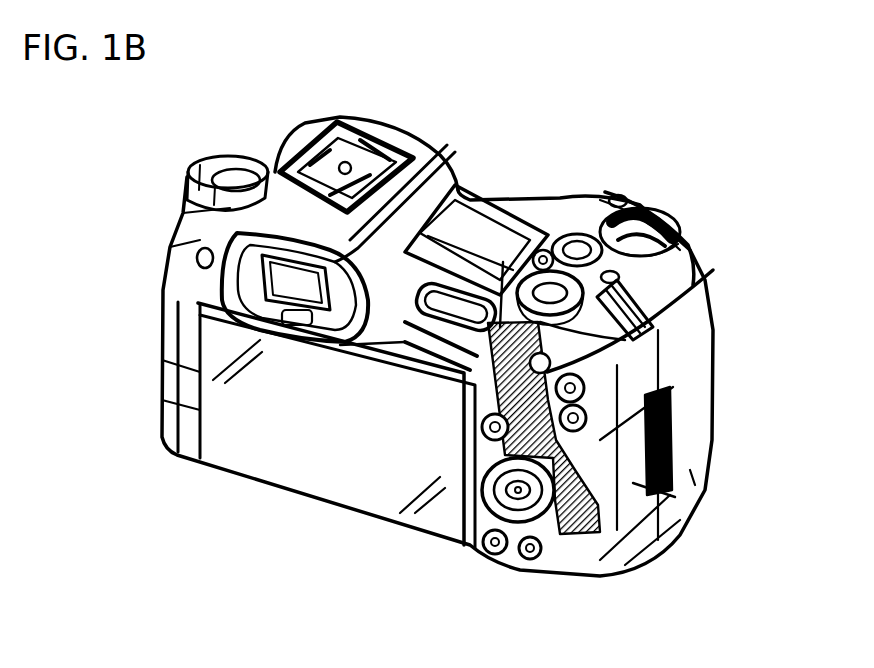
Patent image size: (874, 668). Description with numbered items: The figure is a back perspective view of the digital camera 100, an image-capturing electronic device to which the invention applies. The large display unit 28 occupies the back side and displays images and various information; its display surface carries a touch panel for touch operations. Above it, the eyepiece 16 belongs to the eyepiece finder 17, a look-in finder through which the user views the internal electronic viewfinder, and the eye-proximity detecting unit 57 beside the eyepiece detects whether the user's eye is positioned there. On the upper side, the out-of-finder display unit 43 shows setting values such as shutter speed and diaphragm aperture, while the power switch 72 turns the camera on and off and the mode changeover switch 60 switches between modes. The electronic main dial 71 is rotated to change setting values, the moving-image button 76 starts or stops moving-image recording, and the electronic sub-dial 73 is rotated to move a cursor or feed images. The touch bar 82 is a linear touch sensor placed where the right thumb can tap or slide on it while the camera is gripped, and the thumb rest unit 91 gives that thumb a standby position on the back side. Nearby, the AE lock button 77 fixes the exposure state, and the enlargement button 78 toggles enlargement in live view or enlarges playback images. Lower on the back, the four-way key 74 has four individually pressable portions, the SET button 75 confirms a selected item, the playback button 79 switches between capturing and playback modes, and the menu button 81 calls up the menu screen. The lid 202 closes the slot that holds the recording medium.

The digital camera 100 is at (656, 153).
The power switch 72 is at (243, 181).
The eyepiece 16 is at (286, 262).
The eyepiece finder 17 is at (443, 153).
The out-of-finder display unit 43 is at (490, 227).
The touch bar 82 is at (512, 228).
The mode changeover switch 60 is at (552, 252).
The moving-image button 76 is at (580, 235).
The electronic main dial 71 is at (623, 200).
The electronic sub-dial 73 is at (693, 245).
The thumb rest unit 91 is at (560, 331).
The AE lock button 77 is at (580, 380).
The enlargement button 78 is at (600, 412).
The lid 202 is at (697, 505).
The menu button 81 is at (173, 248).
The eye-proximity detecting unit 57 is at (197, 305).
The display unit 28 is at (300, 460).
The SET button 75 is at (463, 530).
The playback button 79 is at (500, 562).
The four-way key 74 is at (562, 563).